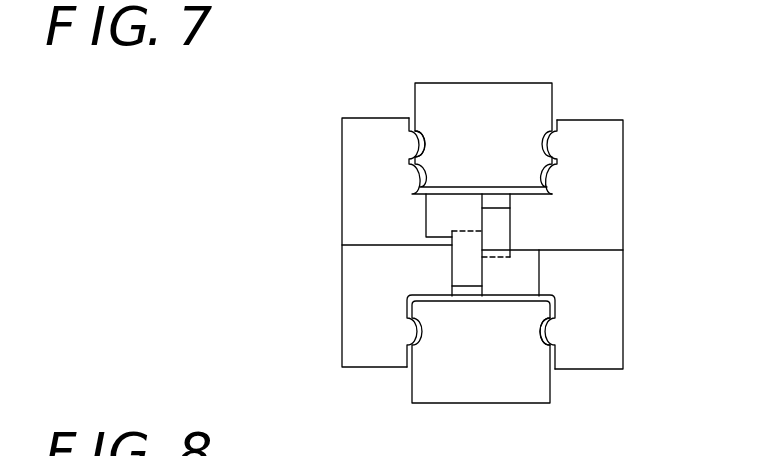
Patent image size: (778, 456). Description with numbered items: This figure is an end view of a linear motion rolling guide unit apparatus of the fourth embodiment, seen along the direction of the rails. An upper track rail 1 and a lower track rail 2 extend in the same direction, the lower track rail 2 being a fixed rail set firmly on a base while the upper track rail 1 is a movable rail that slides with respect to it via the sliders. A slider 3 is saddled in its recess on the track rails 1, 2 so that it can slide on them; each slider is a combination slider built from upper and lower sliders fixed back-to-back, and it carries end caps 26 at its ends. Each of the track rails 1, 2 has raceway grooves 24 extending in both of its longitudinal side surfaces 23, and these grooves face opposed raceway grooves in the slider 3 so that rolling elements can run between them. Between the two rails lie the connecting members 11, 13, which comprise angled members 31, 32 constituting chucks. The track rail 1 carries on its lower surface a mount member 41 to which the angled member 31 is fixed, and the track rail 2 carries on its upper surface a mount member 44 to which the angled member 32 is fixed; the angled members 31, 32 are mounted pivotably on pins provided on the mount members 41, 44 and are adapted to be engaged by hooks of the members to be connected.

The track rail 1 is at (500, 108).
The track rail 2 is at (473, 367).
The slider 3 is at (597, 193).
The connecting member 11 is at (424, 202).
The connecting member 13 is at (545, 272).
The longitudinal side surface 23 is at (413, 103).
The raceway groove 24 is at (419, 148).
The end cap 26 is at (363, 150).
The angled member 31 is at (503, 223).
The angled member 32 is at (462, 262).
The mount member 41 is at (433, 217).
The mount member 44 is at (540, 283).